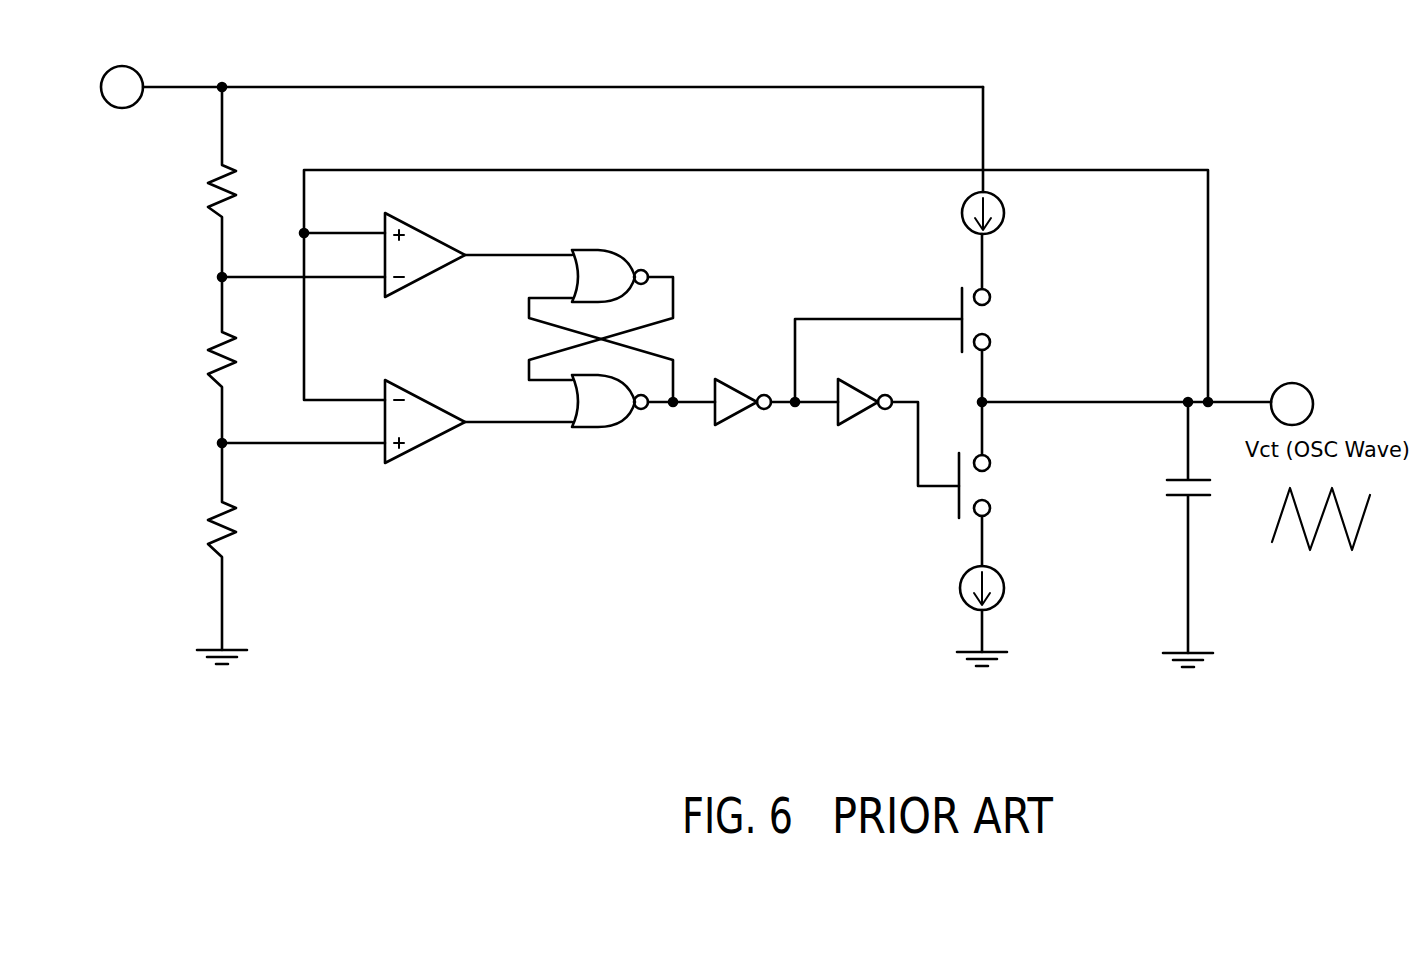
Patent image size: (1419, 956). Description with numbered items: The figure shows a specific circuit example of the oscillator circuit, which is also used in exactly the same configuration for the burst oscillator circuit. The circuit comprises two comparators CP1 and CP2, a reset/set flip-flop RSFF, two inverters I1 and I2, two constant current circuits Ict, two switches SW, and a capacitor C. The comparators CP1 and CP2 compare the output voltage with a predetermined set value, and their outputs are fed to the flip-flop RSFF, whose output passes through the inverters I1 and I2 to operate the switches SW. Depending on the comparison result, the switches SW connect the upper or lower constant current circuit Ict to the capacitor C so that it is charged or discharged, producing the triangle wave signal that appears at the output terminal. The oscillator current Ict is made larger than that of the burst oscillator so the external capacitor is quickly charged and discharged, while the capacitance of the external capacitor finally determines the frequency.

The comparator CP1 is at (445, 242).
The comparator CP2 is at (444, 407).
The reset/set flip-flop RSFF is at (613, 428).
The inverter I1 is at (740, 391).
The inverter I2 is at (862, 391).
The switch SW is at (990, 335).
The constant current circuit Ict is at (962, 226).
The capacitor C is at (1185, 471).